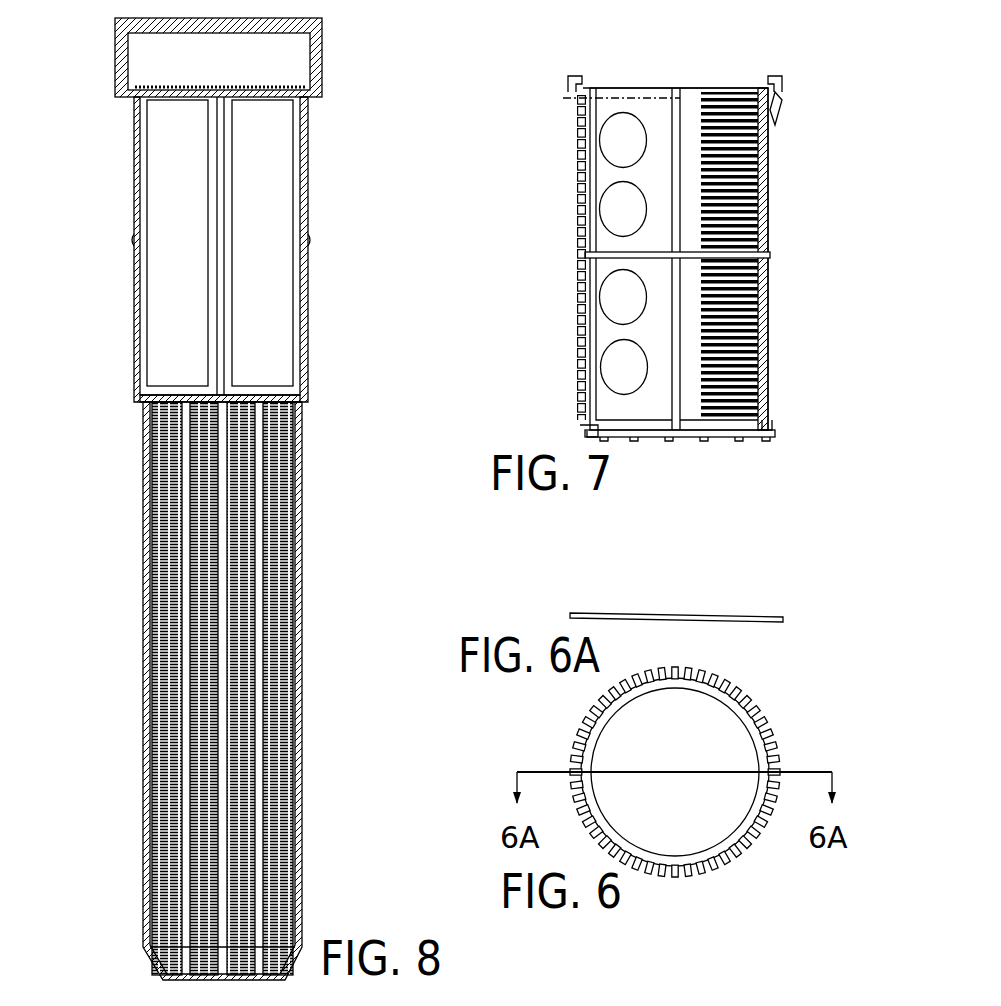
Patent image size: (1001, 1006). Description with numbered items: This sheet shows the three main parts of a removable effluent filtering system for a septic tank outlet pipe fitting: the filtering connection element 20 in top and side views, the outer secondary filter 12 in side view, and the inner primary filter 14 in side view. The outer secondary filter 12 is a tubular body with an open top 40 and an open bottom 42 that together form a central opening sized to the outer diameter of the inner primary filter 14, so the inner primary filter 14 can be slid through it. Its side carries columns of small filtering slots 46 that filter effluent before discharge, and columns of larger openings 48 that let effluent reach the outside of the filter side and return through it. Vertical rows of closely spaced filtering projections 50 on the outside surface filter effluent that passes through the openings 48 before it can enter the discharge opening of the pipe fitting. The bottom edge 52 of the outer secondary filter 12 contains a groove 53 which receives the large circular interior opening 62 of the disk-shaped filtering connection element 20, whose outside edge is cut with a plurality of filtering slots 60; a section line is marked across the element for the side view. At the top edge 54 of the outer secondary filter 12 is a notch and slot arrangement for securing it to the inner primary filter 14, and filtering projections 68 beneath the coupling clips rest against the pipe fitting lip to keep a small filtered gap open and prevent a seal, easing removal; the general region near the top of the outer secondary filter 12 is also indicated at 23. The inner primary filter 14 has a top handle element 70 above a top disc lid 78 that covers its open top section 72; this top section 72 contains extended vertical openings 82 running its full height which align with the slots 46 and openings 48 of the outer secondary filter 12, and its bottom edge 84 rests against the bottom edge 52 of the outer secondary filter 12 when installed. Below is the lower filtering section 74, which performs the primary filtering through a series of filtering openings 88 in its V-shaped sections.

In FIG. 7, the outer secondary filter 12 is at (697, 266).
In FIG. 8, the inner primary filter 14 is at (176, 538).
In FIG. 6A, the filtering connection element 20 is at (795, 600).
In FIG. 6, the filtering connection element 20 is at (724, 776).
In FIG. 7, the top cover 23 is at (622, 78).
In FIG. 7, the open top 40 is at (740, 82).
In FIG. 7, the open bottom 42 is at (715, 448).
In FIG. 7, the filtering slots 46 is at (752, 205).
In FIG. 7, the larger openings 48 is at (608, 218).
In FIG. 7, the filtering projections 50 is at (585, 197).
In FIG. 7, the bottom edge 52 is at (762, 442).
In FIG. 7, the groove 53 is at (770, 427).
In FIG. 7, the top edge 54 is at (790, 88).
In FIG. 6, the filtering slots 60 is at (718, 697).
In FIG. 6, the circular interior opening 62 is at (728, 822).
In FIG. 7, the filtering projections 68 is at (577, 92).
In FIG. 8, the top handle element 70 is at (118, 55).
In FIG. 8, the open top section 72 is at (134, 223).
In FIG. 8, the lower filtering section 74 is at (136, 700).
In FIG. 8, the top disc lid 78 is at (178, 90).
In FIG. 8, the extended vertical openings 82 is at (268, 297).
In FIG. 8, the bottom edge 84 is at (303, 403).
In FIG. 8, the filtering openings 88 is at (278, 848).